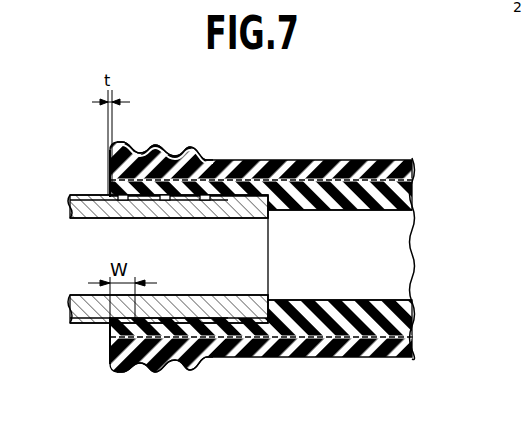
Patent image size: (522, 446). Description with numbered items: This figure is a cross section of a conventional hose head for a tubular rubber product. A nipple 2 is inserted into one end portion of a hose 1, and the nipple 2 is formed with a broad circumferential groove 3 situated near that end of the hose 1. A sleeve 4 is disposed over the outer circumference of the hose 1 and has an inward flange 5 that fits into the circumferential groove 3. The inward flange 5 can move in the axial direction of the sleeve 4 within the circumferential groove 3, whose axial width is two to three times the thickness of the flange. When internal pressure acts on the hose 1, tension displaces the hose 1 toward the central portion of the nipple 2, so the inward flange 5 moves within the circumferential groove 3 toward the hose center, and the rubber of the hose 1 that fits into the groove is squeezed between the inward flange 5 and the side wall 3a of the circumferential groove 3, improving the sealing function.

The hose 1 is at (327, 161).
The nipple 2 is at (193, 212).
The circumferential groove 3 is at (103, 196).
The side wall 3a is at (124, 200).
The sleeve 4 is at (164, 150).
The inward flange 5 is at (108, 162).